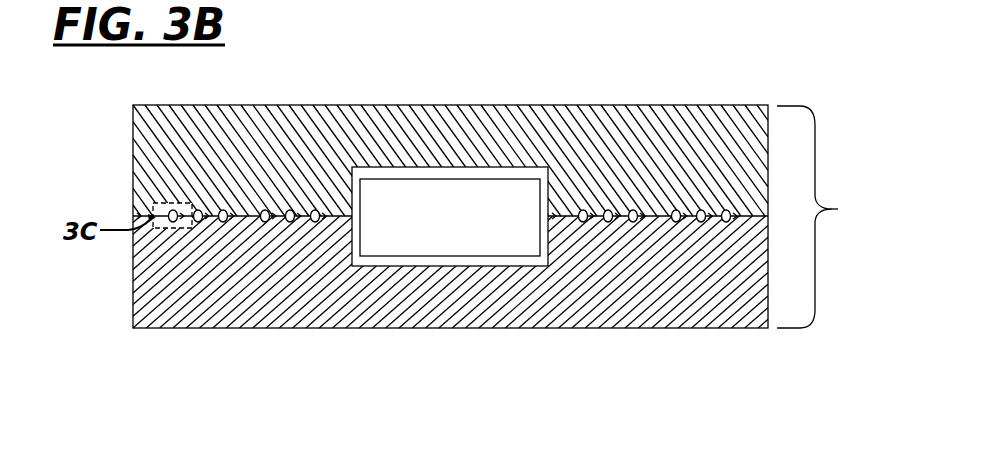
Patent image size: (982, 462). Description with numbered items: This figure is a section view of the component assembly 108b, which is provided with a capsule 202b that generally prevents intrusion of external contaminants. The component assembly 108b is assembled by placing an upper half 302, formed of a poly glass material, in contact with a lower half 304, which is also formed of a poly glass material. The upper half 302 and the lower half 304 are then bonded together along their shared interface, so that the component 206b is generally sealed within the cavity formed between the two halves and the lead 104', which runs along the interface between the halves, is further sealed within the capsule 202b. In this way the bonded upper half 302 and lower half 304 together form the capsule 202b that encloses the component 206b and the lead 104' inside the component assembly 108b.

The component assembly 108b is at (562, 51).
The upper half 302 is at (652, 127).
The lower half 304 is at (638, 308).
The component 206b is at (450, 216).
The lead 104' is at (450, 133).
The capsule 202b is at (836, 217).